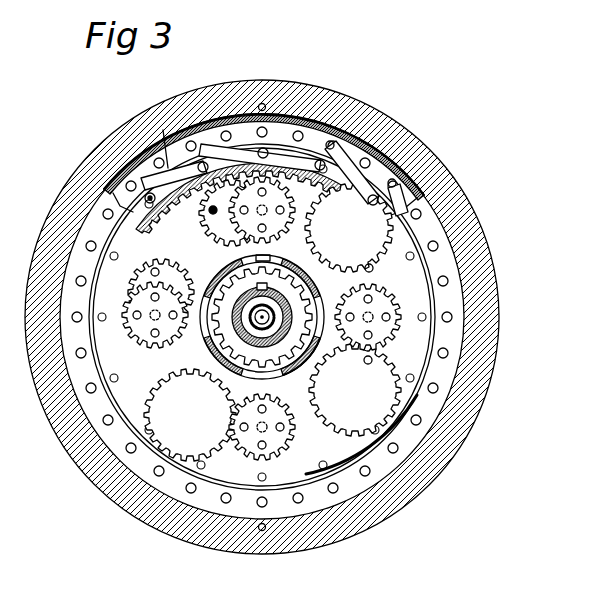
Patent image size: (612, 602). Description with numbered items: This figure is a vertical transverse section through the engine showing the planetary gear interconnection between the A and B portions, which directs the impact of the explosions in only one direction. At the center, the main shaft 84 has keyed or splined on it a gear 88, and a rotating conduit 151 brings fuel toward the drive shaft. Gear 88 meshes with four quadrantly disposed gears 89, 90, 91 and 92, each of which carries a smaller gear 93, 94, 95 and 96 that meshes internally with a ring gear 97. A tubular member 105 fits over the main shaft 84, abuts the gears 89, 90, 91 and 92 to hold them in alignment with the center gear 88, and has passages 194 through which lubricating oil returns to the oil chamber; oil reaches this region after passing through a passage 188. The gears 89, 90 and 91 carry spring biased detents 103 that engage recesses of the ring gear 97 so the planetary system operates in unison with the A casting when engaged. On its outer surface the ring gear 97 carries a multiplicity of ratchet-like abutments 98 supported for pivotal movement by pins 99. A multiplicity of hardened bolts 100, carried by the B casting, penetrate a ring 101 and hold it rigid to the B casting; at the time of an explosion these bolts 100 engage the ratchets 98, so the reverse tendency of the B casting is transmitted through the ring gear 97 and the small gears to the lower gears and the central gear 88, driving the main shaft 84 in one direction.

The main shaft 84 is at (237, 330).
The gear 88 is at (302, 270).
The gear 89 is at (350, 226).
The gear 90 is at (189, 252).
The gear 91 is at (206, 408).
The gear 92 is at (365, 386).
The smaller gear 93 is at (226, 236).
The smaller gear 94 is at (168, 300).
The smaller gear 95 is at (280, 407).
The smaller gear 96 is at (363, 282).
The ring gear 97 is at (432, 232).
The ratchet-like abutment 98 is at (163, 127).
The pin 99 is at (148, 153).
The hardened bolt 100 is at (452, 317).
The ring 101 is at (482, 248).
The spring biased detent 103 is at (209, 213).
The tubular member 105 is at (222, 368).
The rotating conduit 151 is at (263, 338).
The passage 188 is at (264, 103).
The passage 194 is at (298, 372).